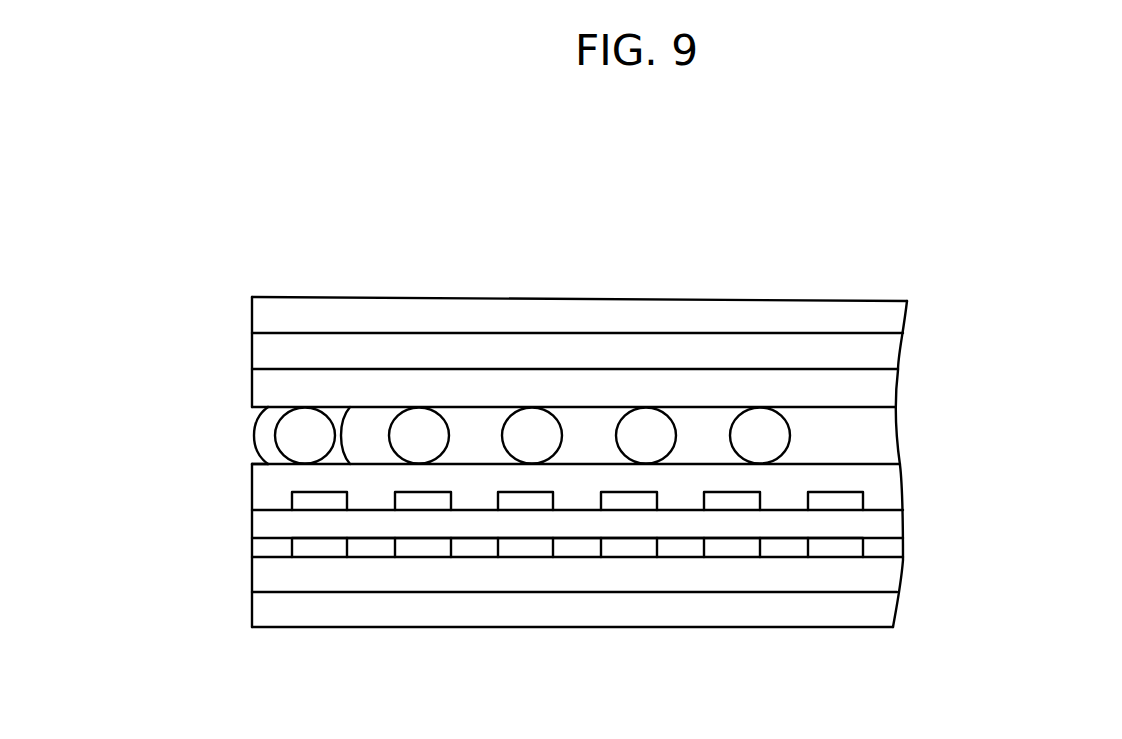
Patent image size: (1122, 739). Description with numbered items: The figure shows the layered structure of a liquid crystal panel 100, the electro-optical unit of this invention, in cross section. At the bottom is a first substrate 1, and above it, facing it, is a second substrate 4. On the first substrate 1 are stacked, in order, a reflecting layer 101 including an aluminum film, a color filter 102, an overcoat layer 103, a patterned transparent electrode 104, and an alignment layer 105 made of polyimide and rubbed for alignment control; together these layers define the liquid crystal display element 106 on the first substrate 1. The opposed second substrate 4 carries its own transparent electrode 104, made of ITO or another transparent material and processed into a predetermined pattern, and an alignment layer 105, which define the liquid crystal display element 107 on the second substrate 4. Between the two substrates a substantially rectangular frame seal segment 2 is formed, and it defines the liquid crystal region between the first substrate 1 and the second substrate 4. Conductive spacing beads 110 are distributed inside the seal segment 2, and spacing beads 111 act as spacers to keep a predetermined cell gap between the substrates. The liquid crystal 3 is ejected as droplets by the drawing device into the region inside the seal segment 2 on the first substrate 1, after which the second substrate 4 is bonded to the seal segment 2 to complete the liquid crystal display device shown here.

The first substrate 1 is at (697, 612).
The seal segment 2 is at (263, 420).
The liquid crystal 3 is at (473, 428).
The second substrate 4 is at (680, 312).
The liquid crystal panel 100 is at (836, 247).
The reflecting layer 101 is at (377, 575).
The color filter 102 is at (312, 550).
The overcoat layer 103 is at (280, 522).
The transparent electrode 104 is at (852, 354).
The alignment layer 105 is at (850, 390).
The liquid crystal display element 106 is at (120, 438).
The liquid crystal display element 107 is at (1020, 317).
The conductive spacing beads 110 is at (305, 427).
The spacing beads 111 is at (772, 436).